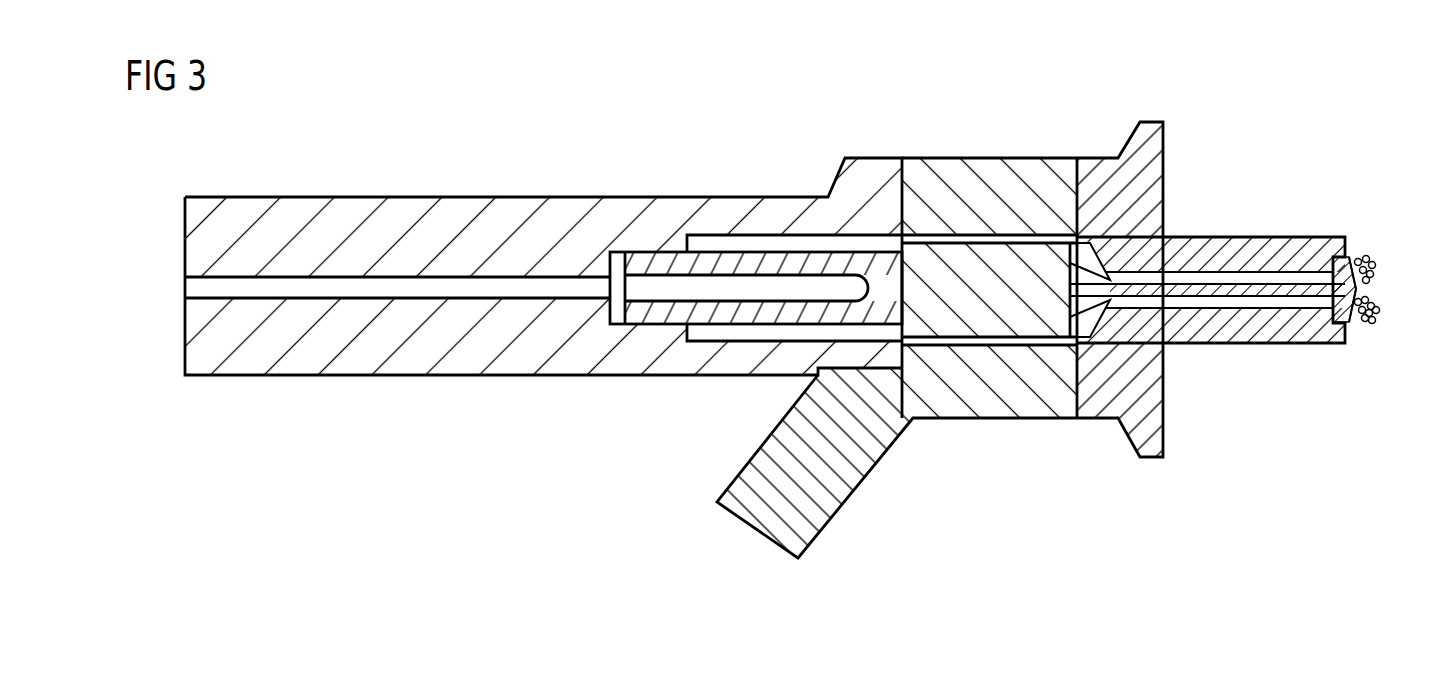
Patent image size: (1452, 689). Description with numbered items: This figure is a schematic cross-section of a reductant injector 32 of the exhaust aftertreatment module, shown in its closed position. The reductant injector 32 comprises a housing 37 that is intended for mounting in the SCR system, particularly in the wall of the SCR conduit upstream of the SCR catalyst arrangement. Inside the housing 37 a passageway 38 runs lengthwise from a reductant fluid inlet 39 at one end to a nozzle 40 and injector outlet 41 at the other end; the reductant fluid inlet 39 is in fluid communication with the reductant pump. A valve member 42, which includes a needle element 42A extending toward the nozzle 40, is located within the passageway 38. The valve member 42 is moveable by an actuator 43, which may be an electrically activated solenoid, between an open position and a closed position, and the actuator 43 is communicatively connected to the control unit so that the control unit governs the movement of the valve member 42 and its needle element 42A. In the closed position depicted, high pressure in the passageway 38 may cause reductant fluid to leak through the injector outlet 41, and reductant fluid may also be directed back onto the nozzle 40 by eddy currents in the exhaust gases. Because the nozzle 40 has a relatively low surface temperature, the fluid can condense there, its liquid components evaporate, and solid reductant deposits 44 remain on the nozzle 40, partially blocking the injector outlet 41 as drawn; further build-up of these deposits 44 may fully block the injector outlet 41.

The reductant injector 32 is at (944, 139).
The housing 37 is at (665, 198).
The passageway 38 is at (348, 290).
The reductant fluid inlet 39 is at (185, 287).
The nozzle 40 is at (1357, 262).
The injector outlet 41 is at (1356, 289).
The valve member 42 is at (727, 312).
The needle element 42A is at (1244, 286).
The actuator 43 is at (1027, 408).
The solid reductant deposits 44 is at (1373, 267).